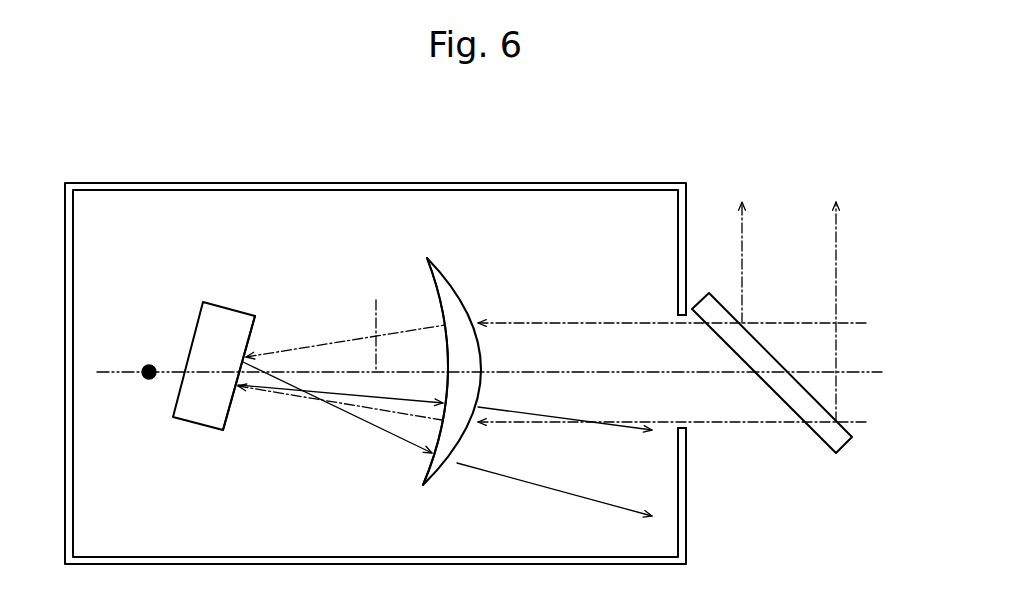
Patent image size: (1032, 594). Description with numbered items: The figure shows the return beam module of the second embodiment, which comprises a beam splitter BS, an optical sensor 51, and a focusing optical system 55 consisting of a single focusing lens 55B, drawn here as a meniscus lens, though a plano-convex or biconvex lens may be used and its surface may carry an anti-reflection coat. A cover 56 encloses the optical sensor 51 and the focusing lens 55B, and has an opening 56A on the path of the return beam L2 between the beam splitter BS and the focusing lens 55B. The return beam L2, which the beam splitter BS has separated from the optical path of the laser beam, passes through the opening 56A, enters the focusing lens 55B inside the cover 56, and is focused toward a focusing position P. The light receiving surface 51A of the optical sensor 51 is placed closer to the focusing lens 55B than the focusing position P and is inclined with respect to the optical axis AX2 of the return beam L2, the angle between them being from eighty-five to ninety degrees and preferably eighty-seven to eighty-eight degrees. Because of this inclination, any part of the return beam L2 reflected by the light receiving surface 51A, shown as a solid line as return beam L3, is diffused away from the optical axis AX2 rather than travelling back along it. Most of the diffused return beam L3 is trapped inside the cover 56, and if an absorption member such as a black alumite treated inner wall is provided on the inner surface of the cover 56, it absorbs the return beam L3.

The optical sensor 51 is at (198, 312).
The light receiving surface 51A is at (230, 428).
The focusing optical system 55 is at (442, 227).
The focusing lens 55B is at (435, 288).
The cover 56 is at (687, 527).
The opening 56A is at (667, 315).
The beam splitter BS is at (710, 302).
The focusing position P is at (147, 381).
The optical axis AX2 is at (379, 325).
The return beam L2 is at (305, 398).
The return beam L3 is at (388, 433).